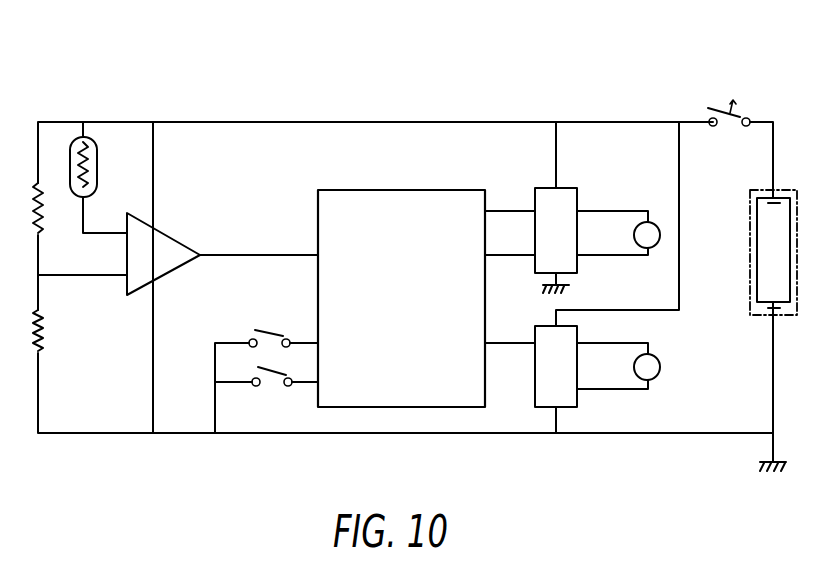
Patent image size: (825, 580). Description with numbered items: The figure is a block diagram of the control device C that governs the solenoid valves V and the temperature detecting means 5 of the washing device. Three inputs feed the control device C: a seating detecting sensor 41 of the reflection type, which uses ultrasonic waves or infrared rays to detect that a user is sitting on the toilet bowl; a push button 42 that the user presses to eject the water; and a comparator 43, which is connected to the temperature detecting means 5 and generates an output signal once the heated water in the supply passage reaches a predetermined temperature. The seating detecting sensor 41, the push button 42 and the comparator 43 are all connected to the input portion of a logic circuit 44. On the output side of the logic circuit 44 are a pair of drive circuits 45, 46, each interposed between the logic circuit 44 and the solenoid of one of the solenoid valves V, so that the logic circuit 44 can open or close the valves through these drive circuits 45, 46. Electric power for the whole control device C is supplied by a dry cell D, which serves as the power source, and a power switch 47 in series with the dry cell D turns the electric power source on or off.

The temperature detecting means 5 is at (97, 168).
The seating detecting sensor 41 is at (272, 376).
The push button 42 is at (274, 333).
The comparator 43 is at (180, 240).
The logic circuit 44 is at (420, 190).
The drive circuit 45 is at (580, 198).
The drive circuit 46 is at (535, 377).
The power switch 47 is at (742, 113).
The solenoid valve V is at (659, 232).
The dry cell D is at (788, 190).
The control device C is at (599, 88).